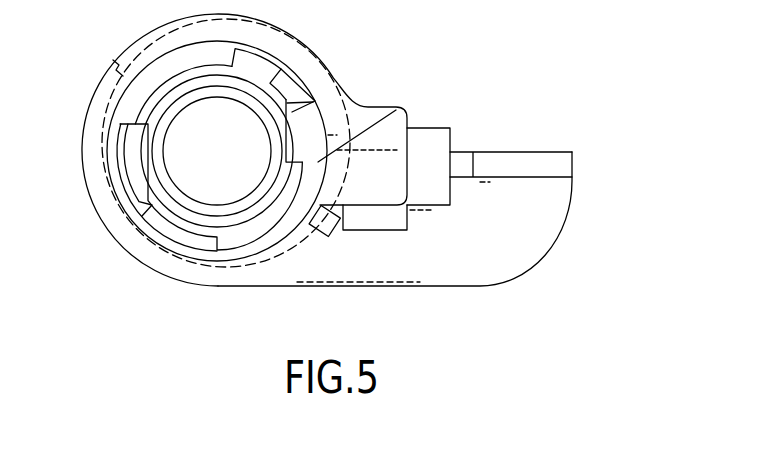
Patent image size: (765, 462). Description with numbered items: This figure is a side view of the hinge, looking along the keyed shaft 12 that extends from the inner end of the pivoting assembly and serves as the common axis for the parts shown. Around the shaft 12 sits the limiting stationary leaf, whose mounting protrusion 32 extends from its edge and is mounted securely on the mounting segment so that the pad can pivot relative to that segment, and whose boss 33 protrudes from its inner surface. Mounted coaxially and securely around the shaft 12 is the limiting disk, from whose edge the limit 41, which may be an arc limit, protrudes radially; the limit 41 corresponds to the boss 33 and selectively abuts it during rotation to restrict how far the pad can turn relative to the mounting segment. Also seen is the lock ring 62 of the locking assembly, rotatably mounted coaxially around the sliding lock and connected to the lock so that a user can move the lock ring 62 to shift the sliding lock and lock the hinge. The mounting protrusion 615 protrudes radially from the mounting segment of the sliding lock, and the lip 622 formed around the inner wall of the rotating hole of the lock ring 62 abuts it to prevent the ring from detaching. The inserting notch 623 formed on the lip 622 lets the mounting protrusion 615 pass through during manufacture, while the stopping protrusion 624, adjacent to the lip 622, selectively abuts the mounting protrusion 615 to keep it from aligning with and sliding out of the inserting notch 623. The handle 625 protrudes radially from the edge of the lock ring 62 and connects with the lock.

The shaft 12 is at (193, 108).
The mounting protrusion 32 is at (557, 201).
The boss 33 is at (340, 224).
The limit 41 is at (115, 63).
The lock ring 62 is at (194, 273).
The mounting protrusion 615 is at (270, 62).
The lip 622 is at (263, 240).
The inserting notch 623 is at (382, 116).
The stopping protrusion 624 is at (285, 87).
The handle 625 is at (400, 152).